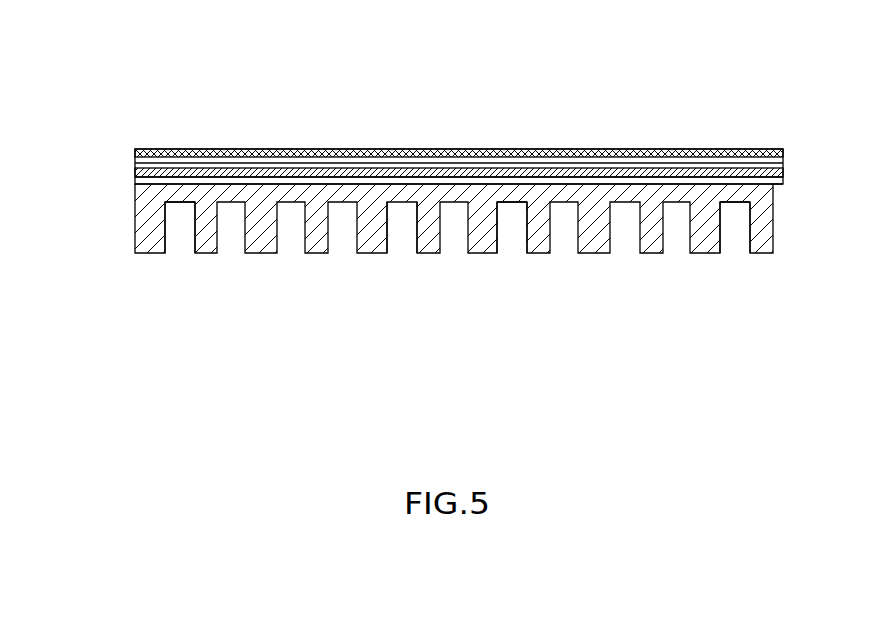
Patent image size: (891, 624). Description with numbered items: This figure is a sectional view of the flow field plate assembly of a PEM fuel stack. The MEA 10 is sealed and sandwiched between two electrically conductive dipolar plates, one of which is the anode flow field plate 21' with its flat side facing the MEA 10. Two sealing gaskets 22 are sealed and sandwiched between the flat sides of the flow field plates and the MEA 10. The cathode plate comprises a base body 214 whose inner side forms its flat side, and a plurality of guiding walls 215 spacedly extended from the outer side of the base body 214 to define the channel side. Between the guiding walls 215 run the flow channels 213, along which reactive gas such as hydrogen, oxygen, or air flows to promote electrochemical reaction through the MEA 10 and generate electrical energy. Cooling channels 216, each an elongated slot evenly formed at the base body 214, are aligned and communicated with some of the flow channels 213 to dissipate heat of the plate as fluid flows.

The MEA 10 is at (786, 264).
The anode flow field plate 21' is at (471, 91).
The sealing gasket 22 is at (148, 152).
The flow channel 213 is at (172, 262).
The base body 214 is at (135, 192).
The guiding wall 215 is at (137, 231).
The cooling channel 216 is at (181, 212).